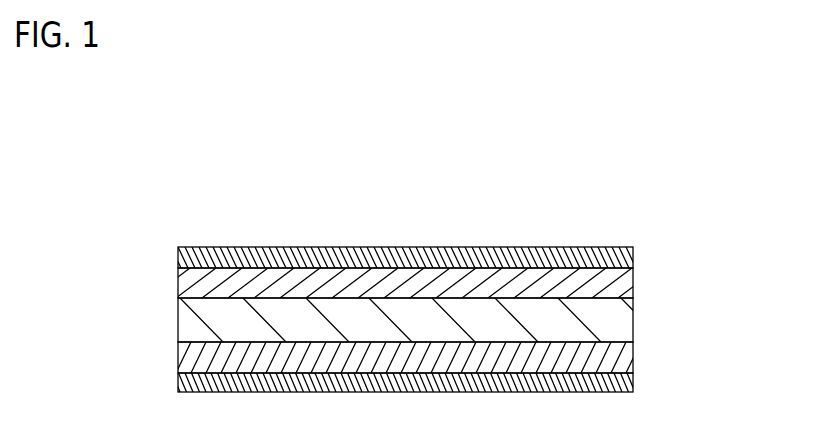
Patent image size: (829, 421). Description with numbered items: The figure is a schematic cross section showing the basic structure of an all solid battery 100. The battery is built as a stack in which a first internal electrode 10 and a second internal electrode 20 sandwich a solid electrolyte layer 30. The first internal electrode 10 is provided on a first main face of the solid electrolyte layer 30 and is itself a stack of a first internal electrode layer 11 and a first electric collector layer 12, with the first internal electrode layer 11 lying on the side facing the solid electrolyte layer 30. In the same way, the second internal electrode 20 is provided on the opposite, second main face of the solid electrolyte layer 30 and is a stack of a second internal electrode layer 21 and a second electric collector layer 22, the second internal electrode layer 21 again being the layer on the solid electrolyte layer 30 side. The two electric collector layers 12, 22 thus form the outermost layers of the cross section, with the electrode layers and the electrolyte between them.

The all solid battery 100 is at (806, 163).
The first internal electrode 10 is at (471, 378).
The first internal electrode layer 11 is at (622, 356).
The first electric collector layer 12 is at (627, 386).
The second internal electrode 20 is at (466, 270).
The second internal electrode layer 21 is at (620, 293).
The second electric collector layer 22 is at (625, 256).
The solid electrolyte layer 30 is at (192, 331).